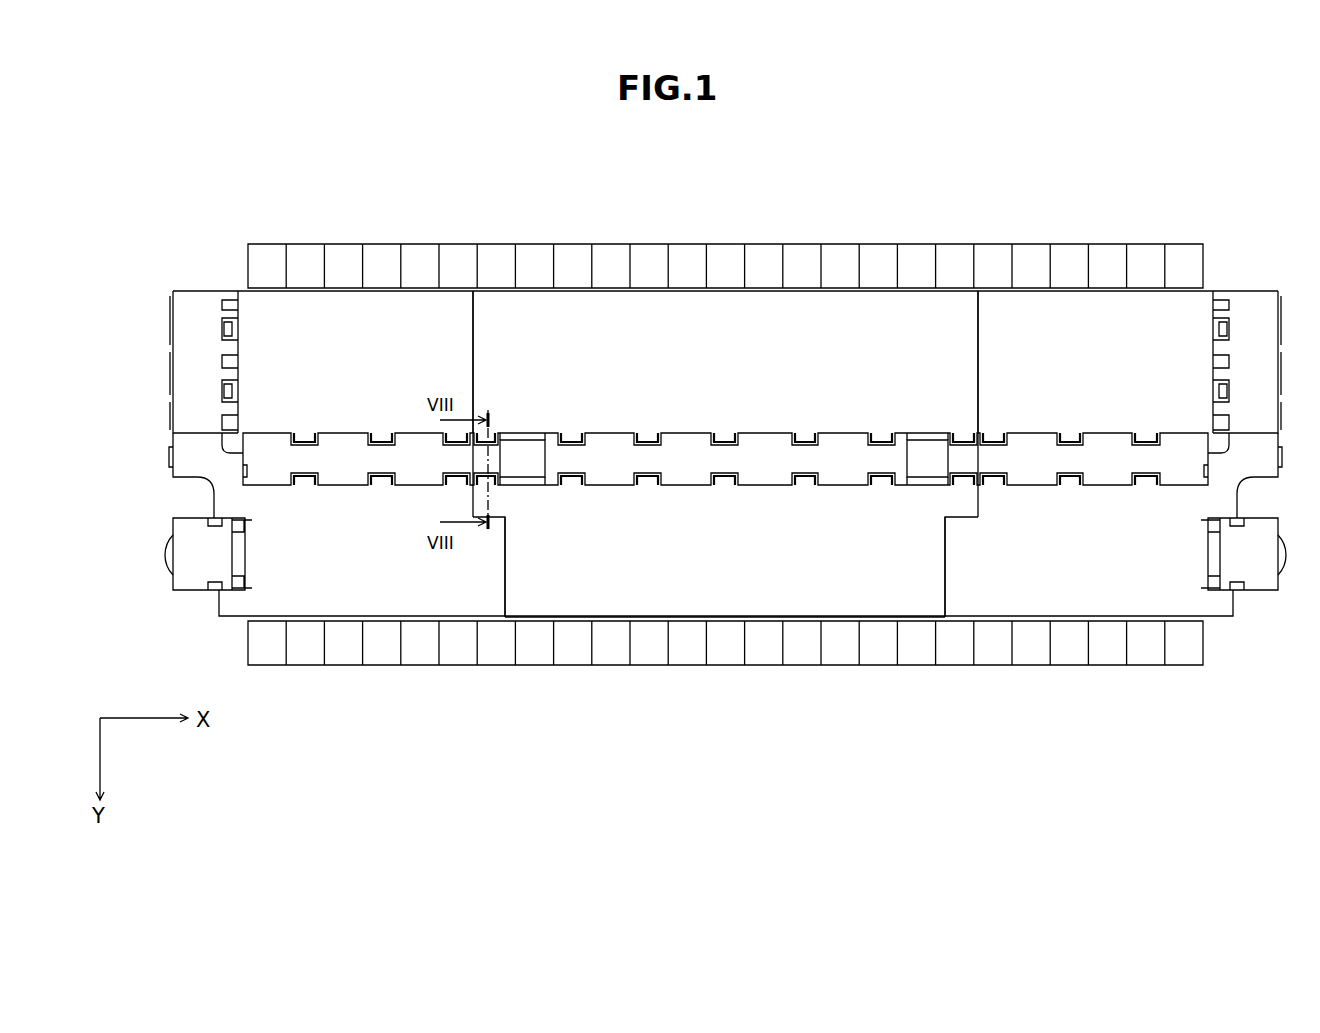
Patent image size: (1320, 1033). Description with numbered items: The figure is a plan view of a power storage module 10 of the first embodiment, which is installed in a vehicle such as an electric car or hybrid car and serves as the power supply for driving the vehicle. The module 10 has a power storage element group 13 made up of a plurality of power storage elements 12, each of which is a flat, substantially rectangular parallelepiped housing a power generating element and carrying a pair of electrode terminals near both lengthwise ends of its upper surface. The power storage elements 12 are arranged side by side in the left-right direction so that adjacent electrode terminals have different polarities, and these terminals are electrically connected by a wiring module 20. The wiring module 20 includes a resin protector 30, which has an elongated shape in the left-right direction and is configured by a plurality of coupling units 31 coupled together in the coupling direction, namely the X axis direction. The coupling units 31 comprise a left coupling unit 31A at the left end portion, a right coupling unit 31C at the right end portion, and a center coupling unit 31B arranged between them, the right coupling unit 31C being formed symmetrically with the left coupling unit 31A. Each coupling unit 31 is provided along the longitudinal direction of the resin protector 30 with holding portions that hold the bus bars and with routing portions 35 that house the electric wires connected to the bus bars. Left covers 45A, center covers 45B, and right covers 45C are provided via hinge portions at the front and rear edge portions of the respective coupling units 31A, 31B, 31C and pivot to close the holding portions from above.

The power storage module 10 is at (1232, 247).
The power storage element 12 is at (268, 652).
The power storage element group 13 is at (1234, 653).
The wiring module 20 is at (203, 310).
The resin protector 30 is at (185, 358).
The coupling unit 31 is at (726, 603).
The left coupling unit 31A is at (383, 586).
The center coupling unit 31B is at (662, 590).
The right coupling unit 31C is at (995, 598).
The routing portion 35 is at (270, 433).
The left cover 45A is at (436, 586).
The center cover 45B is at (768, 598).
The right cover 45C is at (1075, 592).